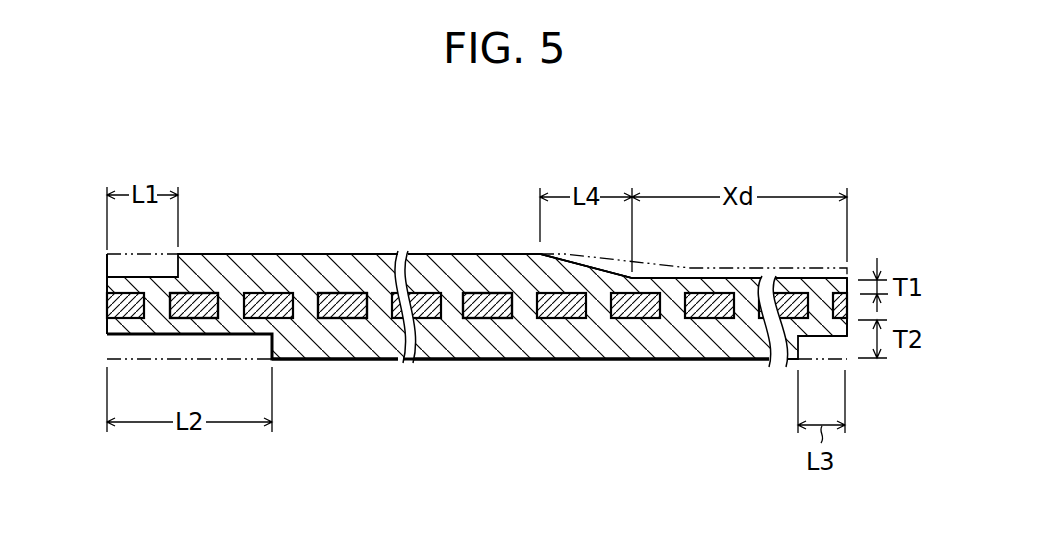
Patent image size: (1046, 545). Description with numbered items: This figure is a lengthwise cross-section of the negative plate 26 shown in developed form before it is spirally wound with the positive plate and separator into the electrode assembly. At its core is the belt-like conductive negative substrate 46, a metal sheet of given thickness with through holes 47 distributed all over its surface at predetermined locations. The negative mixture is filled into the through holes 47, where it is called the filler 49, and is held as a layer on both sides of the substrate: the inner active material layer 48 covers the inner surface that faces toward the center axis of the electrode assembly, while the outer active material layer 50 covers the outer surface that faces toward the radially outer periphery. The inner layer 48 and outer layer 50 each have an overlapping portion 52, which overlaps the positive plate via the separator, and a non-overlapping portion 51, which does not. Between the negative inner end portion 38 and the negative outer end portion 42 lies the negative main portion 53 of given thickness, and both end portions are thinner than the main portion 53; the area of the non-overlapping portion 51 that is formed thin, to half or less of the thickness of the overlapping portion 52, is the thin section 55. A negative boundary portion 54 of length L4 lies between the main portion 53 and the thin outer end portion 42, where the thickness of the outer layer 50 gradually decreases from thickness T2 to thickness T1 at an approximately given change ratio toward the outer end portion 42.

The negative plate 26 is at (781, 149).
The negative inner end portion 38 is at (129, 278).
The negative outer end portion 42 is at (822, 285).
The negative substrate 46 is at (490, 308).
The through holes 47 is at (220, 297).
The inner active material layer 48 is at (519, 335).
The filler 49 is at (461, 322).
The outer active material layer 50 is at (499, 272).
The non-overlapping portion 51 is at (160, 281).
The overlapping portion 52 is at (431, 272).
The negative main portion 53 is at (380, 268).
The negative boundary portion 54 is at (565, 280).
The thin section 55 is at (114, 283).